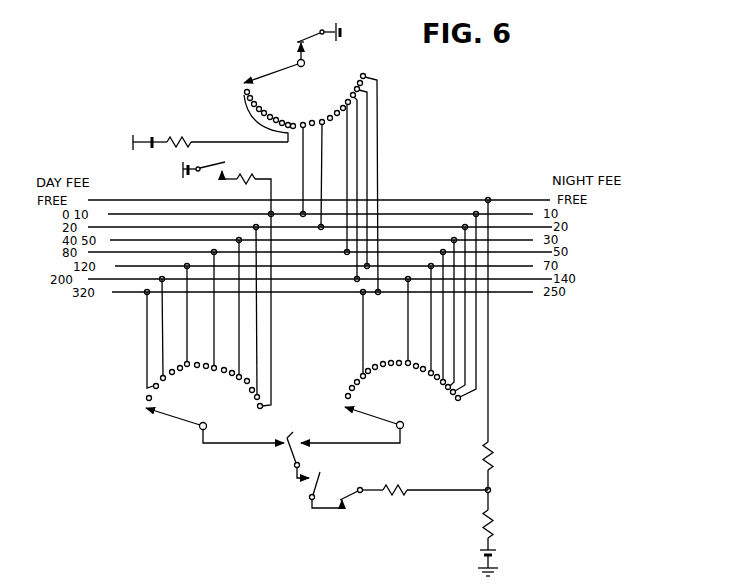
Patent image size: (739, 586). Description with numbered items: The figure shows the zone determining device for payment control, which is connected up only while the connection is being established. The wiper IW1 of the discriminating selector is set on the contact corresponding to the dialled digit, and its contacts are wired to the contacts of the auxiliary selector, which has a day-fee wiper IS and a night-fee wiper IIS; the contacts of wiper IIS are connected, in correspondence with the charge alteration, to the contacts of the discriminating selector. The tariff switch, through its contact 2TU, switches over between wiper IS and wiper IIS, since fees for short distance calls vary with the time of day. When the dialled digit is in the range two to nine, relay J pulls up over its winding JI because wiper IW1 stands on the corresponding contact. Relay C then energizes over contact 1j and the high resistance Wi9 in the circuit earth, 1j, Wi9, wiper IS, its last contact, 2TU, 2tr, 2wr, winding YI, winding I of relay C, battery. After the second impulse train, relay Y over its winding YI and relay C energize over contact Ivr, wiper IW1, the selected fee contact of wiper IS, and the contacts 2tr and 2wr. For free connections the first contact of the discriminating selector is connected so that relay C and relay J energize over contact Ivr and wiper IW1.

The contact of relay VR Ivr is at (314, 38).
The wiper of discriminating selector W1 IW1 is at (312, 177).
The winding I of relay J JI is at (210, 130).
The contact of relay J 1j is at (204, 175).
The high resistance Wi9 is at (246, 187).
The wiper of auxiliary selector S IS is at (215, 328).
The second wiper of auxiliary selector S IIS is at (390, 328).
The contact of tariff switch TU 2TU is at (307, 449).
The contact of relay TR 2tr is at (310, 490).
The contact of relay WR 2wr is at (361, 505).
The winding I of relay Y YI is at (435, 476).
The relay J is at (482, 345).
The relay C is at (479, 534).